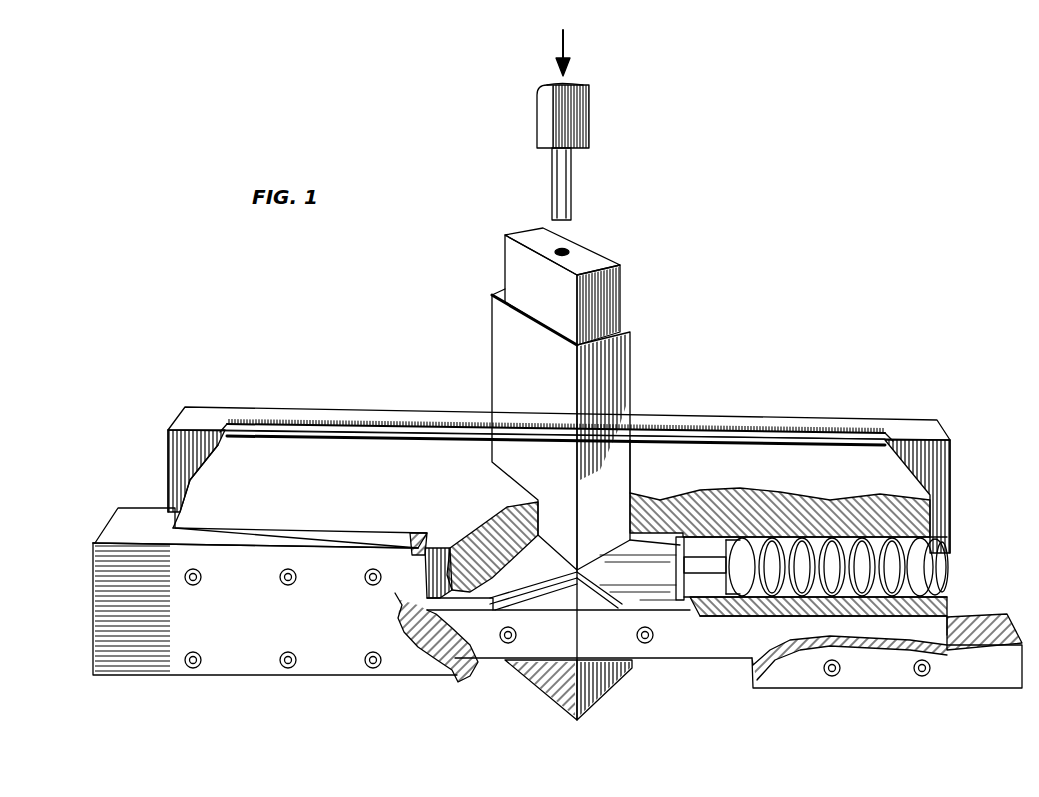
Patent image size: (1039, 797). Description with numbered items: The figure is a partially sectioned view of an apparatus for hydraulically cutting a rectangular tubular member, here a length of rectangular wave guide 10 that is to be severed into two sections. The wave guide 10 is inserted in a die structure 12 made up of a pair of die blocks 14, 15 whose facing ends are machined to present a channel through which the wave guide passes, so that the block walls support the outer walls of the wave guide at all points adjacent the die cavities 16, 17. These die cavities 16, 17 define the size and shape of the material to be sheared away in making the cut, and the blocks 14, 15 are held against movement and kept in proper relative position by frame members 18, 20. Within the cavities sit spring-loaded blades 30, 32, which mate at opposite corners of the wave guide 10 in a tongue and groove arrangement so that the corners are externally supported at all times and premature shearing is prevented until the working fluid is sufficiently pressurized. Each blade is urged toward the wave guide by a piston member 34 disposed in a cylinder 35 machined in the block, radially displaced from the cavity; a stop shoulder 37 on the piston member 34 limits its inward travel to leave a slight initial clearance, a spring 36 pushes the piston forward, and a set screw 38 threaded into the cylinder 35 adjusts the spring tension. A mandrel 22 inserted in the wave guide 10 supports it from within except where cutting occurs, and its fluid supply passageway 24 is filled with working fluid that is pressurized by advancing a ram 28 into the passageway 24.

The wave guide 10 is at (632, 367).
The die structure 12 is at (816, 381).
The die block 14 is at (336, 494).
The die block 15 is at (852, 474).
The die cavity 16 is at (427, 609).
The die cavity 17 is at (684, 600).
The frame member 18 is at (176, 420).
The frame member 20 is at (142, 508).
The mandrel 22 is at (630, 287).
The fluid supply passageway 24 is at (568, 251).
The ram 28 is at (590, 112).
The blade 30 is at (531, 582).
The blade 32 is at (654, 582).
The piston member 34 is at (710, 574).
The cylinder 35 is at (848, 600).
The spring 36 is at (790, 540).
The stop shoulder 37 is at (727, 548).
The set screw 38 is at (944, 572).